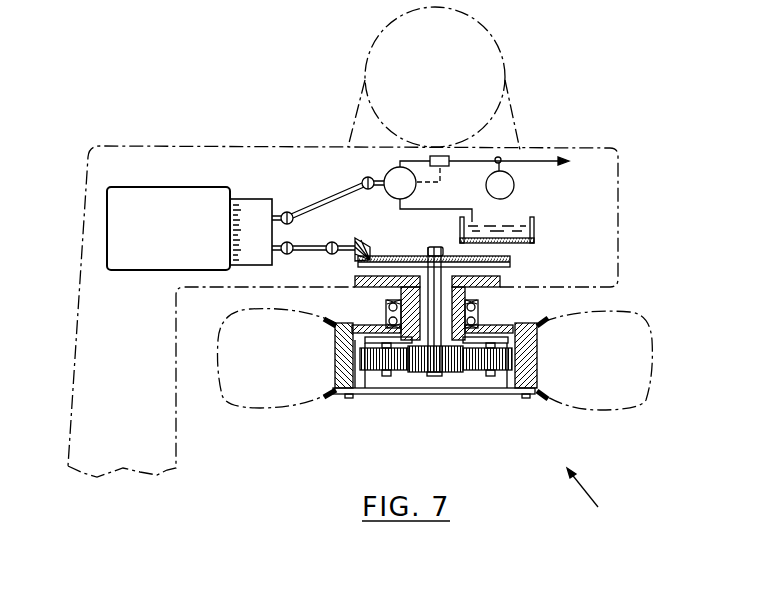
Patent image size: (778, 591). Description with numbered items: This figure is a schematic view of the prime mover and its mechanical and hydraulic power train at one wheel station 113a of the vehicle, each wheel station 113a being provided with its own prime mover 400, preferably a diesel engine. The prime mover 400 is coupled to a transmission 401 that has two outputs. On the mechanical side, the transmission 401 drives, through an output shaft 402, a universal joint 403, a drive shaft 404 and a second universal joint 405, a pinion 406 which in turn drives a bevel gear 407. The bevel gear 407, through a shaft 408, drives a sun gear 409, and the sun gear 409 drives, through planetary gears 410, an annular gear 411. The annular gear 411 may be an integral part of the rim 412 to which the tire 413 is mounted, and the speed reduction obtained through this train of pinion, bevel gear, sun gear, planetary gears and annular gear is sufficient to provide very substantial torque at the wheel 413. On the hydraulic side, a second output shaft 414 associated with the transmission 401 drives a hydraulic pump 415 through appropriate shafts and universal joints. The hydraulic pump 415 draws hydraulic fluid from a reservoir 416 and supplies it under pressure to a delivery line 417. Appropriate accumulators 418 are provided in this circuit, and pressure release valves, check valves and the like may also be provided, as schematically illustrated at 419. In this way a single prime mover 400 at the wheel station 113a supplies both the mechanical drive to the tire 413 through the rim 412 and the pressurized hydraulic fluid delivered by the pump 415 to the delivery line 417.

The prime mover 400 is at (166, 205).
The transmission 401 is at (245, 212).
The output shaft 402 is at (291, 236).
The universal joint 403 is at (287, 256).
The drive shaft 404 is at (300, 255).
The second universal joint 405 is at (332, 256).
The pinion 406 is at (372, 246).
The bevel gear 407 is at (512, 263).
The shaft 408 is at (435, 297).
The sun gear 409 is at (446, 374).
The planetary gears 410 is at (498, 370).
The annular gear 411 is at (375, 370).
The rim 412 is at (530, 357).
The tire 413 is at (580, 412).
The second output shaft 414 is at (279, 210).
The hydraulic pump 415 is at (387, 163).
The reservoir 416 is at (535, 232).
The delivery line 417 is at (533, 158).
The accumulators 418 is at (482, 157).
The pressure release valves, check valves and the like 419 is at (438, 156).
The wheel station 113a is at (610, 498).